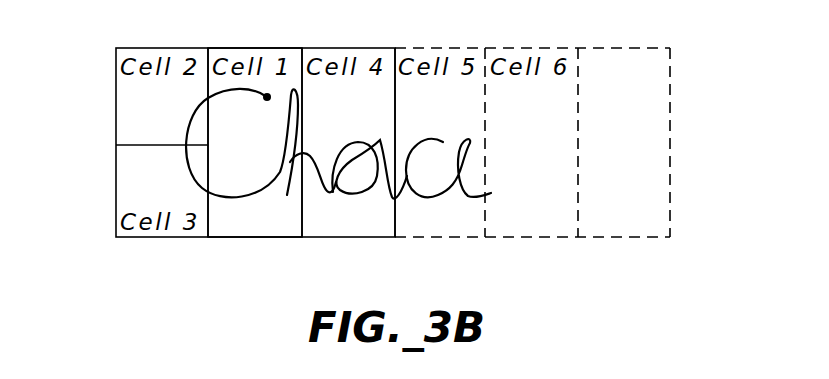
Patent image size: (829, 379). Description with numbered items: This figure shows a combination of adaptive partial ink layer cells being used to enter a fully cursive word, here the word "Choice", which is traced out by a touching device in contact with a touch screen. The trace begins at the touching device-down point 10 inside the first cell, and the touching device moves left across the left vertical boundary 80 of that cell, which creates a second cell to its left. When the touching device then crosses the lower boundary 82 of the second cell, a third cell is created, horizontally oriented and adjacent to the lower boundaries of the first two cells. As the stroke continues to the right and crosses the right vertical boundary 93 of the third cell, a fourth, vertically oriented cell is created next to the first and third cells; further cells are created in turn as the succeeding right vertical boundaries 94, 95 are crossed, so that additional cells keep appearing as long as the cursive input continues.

The left vertical boundary 80 is at (217, 50).
The touching device-down point 10 is at (268, 97).
The lower boundary 82 is at (138, 145).
The right vertical boundary 93 is at (302, 223).
The cell boundary 94 is at (395, 223).
The cell boundary 95 is at (485, 223).